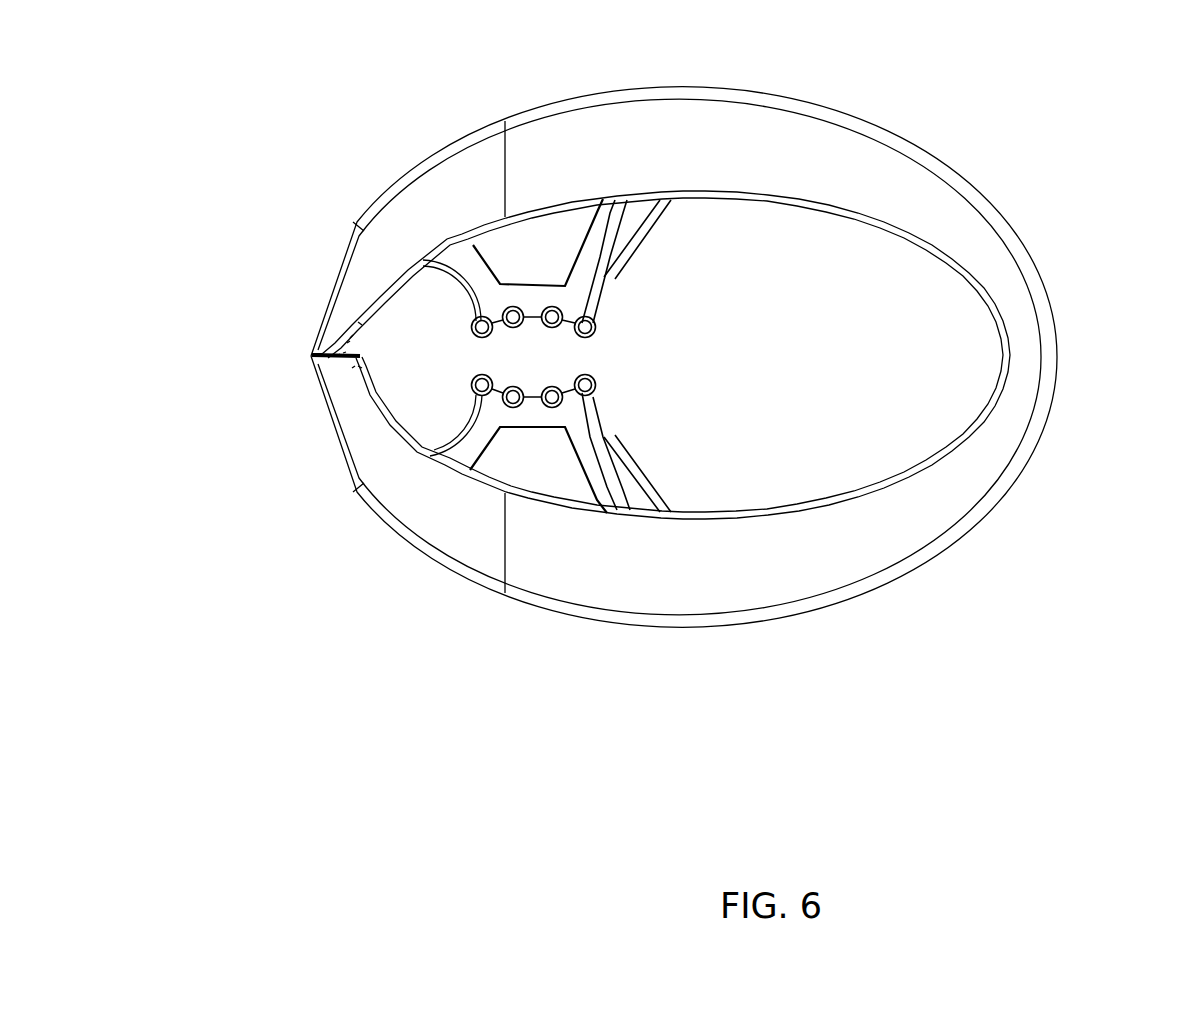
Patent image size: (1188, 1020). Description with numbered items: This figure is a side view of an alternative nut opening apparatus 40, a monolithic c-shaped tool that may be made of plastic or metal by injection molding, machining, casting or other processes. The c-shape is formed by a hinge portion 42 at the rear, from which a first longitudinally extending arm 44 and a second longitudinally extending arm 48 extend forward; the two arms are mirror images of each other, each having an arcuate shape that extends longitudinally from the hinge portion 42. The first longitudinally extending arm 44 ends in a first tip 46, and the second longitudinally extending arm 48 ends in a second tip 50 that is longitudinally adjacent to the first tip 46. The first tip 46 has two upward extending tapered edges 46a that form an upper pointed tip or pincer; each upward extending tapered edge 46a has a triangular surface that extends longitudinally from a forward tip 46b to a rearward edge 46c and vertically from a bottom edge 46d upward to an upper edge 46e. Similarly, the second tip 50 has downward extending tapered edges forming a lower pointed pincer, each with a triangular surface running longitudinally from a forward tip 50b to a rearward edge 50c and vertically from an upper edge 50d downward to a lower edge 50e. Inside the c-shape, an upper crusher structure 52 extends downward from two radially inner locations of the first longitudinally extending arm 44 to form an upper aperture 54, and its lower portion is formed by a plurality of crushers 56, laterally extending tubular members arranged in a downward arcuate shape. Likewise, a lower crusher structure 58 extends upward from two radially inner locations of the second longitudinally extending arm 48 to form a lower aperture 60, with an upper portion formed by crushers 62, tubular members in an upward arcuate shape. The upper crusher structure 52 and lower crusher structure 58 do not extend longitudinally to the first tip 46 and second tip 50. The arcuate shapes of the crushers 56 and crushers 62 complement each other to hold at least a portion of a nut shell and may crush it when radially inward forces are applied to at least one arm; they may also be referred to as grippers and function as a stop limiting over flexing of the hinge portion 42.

The nut opening apparatus 40 is at (316, 117).
The hinge portion 42 is at (1028, 358).
The first longitudinally extending arm 44 is at (810, 138).
The first tip 46 is at (342, 348).
The upward extending tapered edges 46a is at (347, 343).
The forward tip 46b is at (312, 355).
The rearward edge 46c is at (340, 354).
The bottom edge 46d is at (362, 325).
The upper edge 46e is at (353, 335).
The second longitudinally extending arm 48 is at (810, 562).
The second tip 50 is at (350, 370).
The forward tip 50b is at (318, 356).
The rearward edge 50c is at (362, 368).
The upper edge 50d is at (343, 353).
The lower edge 50e is at (352, 368).
The upper crusher structure 52 is at (614, 223).
The upper aperture 54 is at (545, 234).
The crushers 56 is at (550, 322).
The lower crusher structure 58 is at (622, 502).
The lower aperture 60 is at (547, 477).
The crushers 62 is at (550, 396).